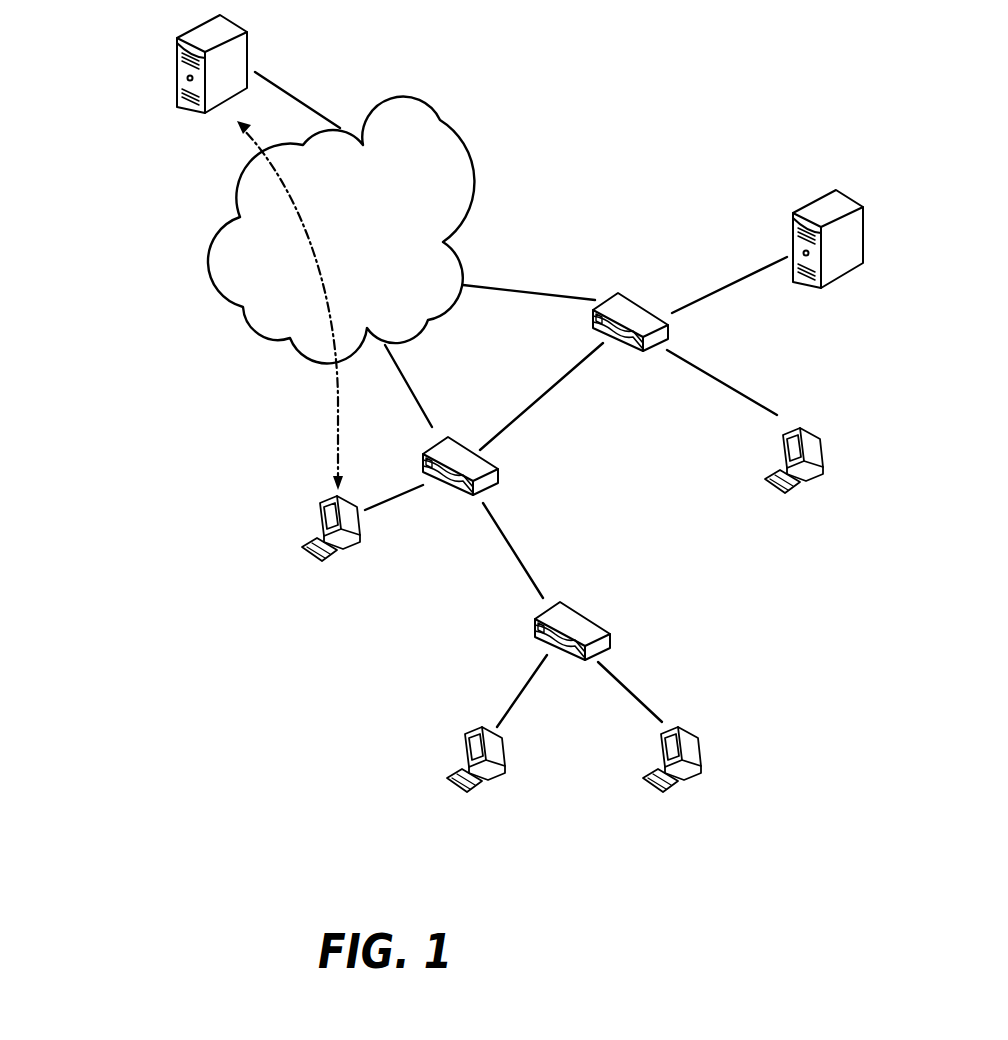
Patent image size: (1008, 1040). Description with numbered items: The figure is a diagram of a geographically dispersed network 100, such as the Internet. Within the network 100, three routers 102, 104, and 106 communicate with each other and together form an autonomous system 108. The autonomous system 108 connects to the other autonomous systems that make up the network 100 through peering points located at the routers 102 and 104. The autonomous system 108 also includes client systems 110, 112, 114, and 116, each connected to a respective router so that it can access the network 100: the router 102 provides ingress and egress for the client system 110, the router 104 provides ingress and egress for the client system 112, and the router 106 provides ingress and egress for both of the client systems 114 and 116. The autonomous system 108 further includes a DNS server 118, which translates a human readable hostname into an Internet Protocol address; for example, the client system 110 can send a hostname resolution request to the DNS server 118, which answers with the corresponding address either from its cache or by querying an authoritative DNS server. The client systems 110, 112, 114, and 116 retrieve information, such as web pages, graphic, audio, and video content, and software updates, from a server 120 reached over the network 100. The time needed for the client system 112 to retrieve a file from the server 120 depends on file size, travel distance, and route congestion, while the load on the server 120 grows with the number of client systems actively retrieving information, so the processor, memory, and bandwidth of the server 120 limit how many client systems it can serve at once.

The network 100 is at (190, 277).
The router 102 is at (640, 306).
The router 104 is at (473, 497).
The router 106 is at (537, 625).
The autonomous system 108 is at (676, 131).
The client system 110 is at (785, 438).
The client system 112 is at (321, 506).
The client system 114 is at (468, 737).
The client system 116 is at (664, 737).
The DNS server 118 is at (811, 216).
The server 120 is at (186, 42).